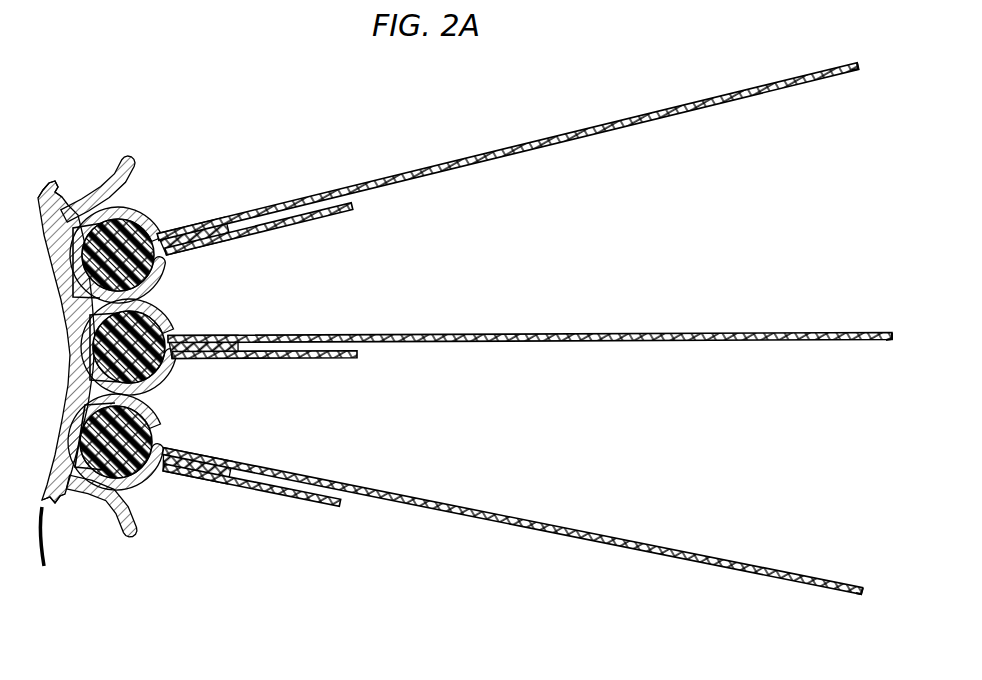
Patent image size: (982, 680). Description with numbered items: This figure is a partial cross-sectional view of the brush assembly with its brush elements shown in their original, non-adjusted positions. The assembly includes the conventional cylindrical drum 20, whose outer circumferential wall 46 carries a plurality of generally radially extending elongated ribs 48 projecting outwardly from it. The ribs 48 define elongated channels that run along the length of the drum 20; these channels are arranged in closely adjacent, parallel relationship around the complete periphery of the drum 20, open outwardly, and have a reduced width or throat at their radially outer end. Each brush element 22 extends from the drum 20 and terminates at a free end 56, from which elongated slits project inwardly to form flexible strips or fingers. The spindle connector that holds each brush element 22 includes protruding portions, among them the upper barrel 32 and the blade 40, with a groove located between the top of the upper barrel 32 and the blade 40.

The drum 20 is at (44, 554).
The brush element 22 is at (470, 160).
The upper barrel 32 is at (92, 428).
The blade 40 is at (204, 233).
The outer circumferential wall 46 is at (60, 204).
The ribs 48 is at (138, 176).
The free end 56 is at (858, 67).